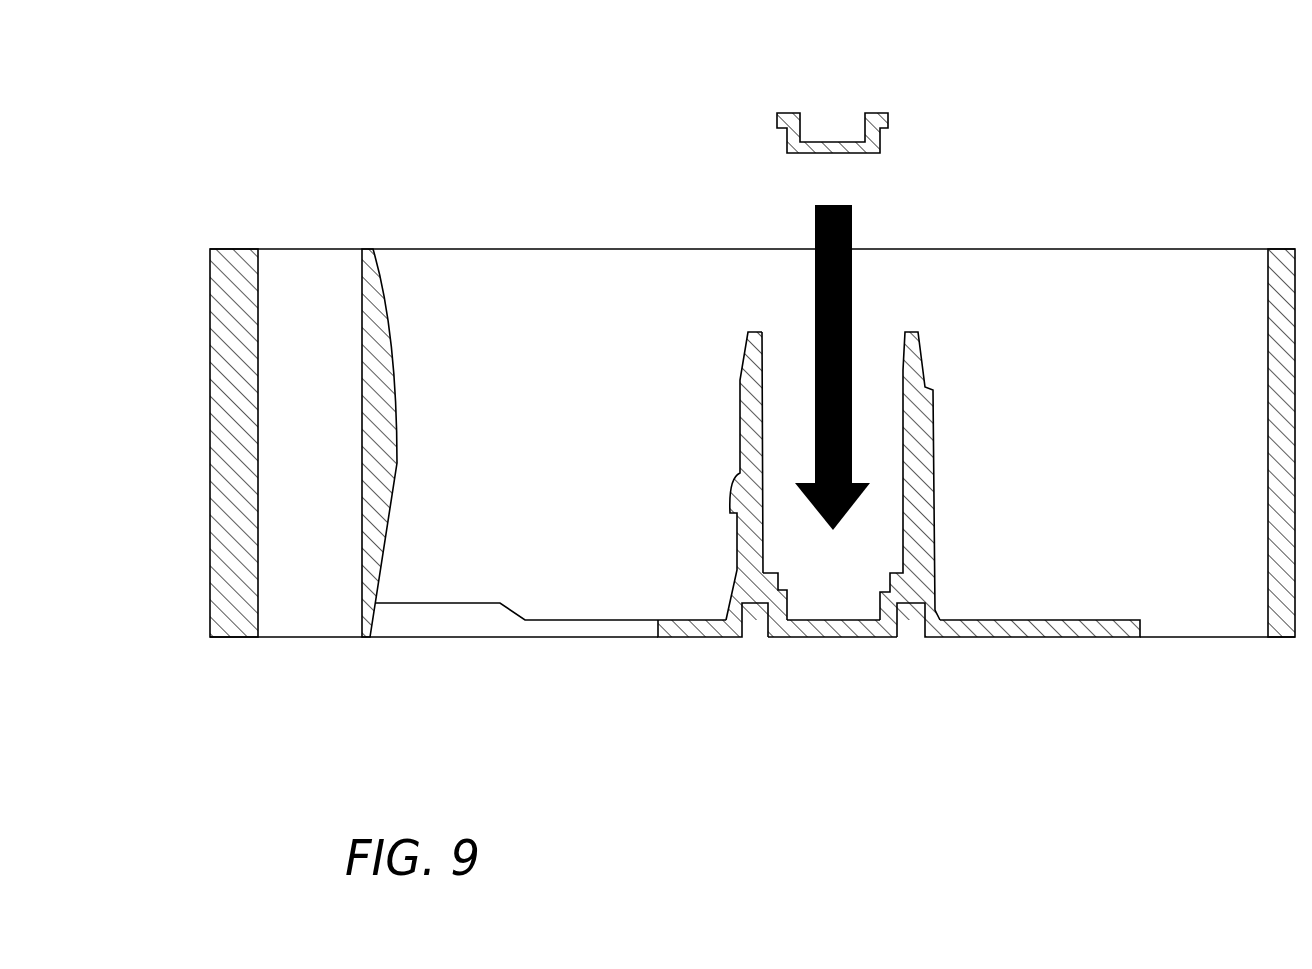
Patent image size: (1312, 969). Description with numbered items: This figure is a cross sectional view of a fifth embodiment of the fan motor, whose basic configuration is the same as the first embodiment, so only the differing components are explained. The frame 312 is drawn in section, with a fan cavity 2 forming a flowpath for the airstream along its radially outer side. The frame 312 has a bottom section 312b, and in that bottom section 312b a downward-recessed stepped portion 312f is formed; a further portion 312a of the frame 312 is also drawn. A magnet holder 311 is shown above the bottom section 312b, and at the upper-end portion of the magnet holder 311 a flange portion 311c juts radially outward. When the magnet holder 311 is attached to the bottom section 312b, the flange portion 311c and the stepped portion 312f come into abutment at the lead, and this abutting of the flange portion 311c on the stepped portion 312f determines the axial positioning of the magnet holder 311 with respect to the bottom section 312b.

The fan cavity 2 is at (383, 407).
The magnet holder 311 is at (800, 158).
The flange portion 311c is at (888, 128).
The frame 312 is at (881, 575).
The right projection 312a is at (917, 467).
The bottom section 312b is at (853, 637).
The stepped portion 312f is at (785, 587).